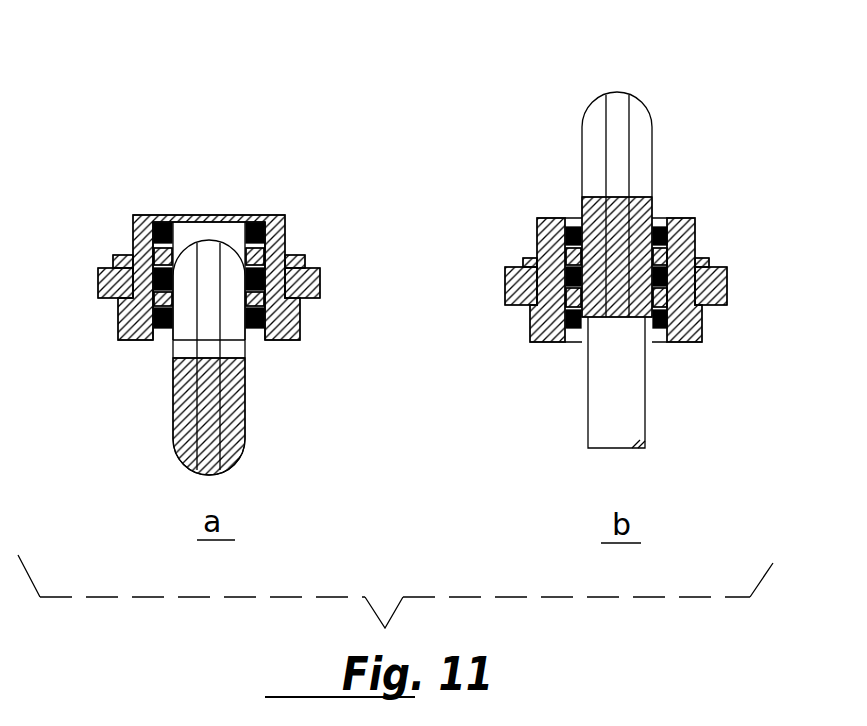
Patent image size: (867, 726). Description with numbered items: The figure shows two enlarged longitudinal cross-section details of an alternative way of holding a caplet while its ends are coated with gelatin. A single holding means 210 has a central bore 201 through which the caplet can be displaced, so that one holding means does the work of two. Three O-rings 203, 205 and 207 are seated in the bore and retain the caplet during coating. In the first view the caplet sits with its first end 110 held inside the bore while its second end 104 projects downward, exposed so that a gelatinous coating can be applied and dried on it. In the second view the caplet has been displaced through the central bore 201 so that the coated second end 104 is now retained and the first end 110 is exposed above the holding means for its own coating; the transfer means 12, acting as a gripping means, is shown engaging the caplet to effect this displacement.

The central bore 201 is at (213, 233).
The single holding means 210 is at (132, 228).
The O-ring 207 is at (538, 234).
The O-ring 205 is at (507, 298).
The O-ring 203 is at (528, 332).
The second end of the caplet 104 is at (236, 458).
The first end of the caplet 110 is at (618, 105).
The transfer means 12 is at (630, 403).